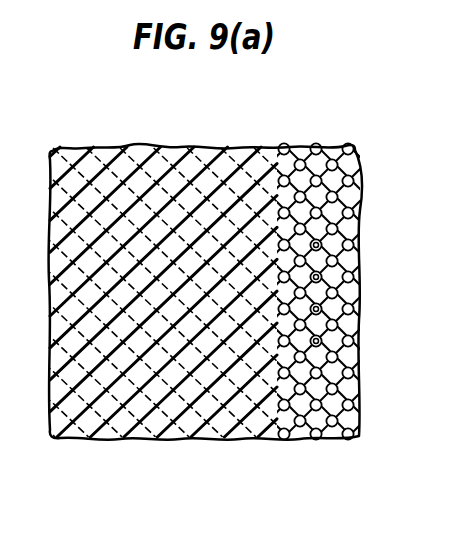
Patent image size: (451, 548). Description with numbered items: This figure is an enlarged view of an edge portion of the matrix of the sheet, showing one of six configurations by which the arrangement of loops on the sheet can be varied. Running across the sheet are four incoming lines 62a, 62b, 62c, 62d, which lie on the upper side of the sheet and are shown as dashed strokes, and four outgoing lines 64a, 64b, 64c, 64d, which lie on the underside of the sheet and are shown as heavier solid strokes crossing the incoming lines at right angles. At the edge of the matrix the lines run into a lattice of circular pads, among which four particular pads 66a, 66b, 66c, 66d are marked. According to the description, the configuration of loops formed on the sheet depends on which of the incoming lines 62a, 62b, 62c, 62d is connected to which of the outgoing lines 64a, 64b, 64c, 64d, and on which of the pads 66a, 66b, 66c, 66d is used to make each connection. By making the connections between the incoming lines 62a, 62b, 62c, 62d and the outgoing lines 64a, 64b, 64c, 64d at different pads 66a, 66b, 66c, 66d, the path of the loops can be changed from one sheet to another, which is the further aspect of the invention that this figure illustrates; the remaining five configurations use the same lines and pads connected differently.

The incoming line 62a is at (120, 441).
The incoming line 62b is at (161, 441).
The incoming line 62c is at (195, 440).
The incoming line 62d is at (230, 440).
The outgoing line 64a is at (230, 152).
The outgoing line 64b is at (201, 149).
The outgoing line 64c is at (162, 148).
The outgoing line 64d is at (131, 151).
The pad 66a is at (321, 242).
The pad 66b is at (321, 274).
The pad 66c is at (321, 306).
The pad 66d is at (321, 338).